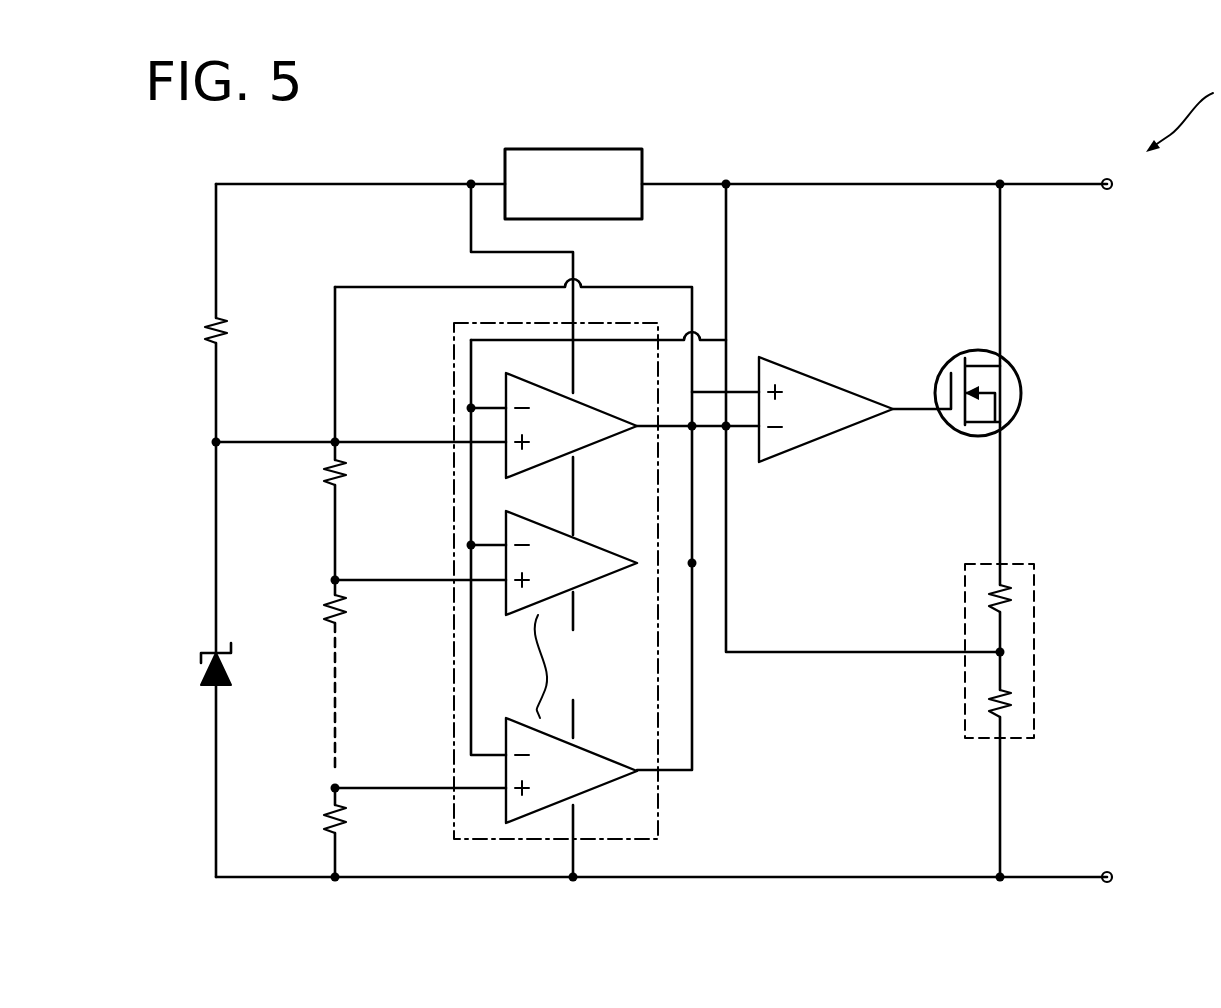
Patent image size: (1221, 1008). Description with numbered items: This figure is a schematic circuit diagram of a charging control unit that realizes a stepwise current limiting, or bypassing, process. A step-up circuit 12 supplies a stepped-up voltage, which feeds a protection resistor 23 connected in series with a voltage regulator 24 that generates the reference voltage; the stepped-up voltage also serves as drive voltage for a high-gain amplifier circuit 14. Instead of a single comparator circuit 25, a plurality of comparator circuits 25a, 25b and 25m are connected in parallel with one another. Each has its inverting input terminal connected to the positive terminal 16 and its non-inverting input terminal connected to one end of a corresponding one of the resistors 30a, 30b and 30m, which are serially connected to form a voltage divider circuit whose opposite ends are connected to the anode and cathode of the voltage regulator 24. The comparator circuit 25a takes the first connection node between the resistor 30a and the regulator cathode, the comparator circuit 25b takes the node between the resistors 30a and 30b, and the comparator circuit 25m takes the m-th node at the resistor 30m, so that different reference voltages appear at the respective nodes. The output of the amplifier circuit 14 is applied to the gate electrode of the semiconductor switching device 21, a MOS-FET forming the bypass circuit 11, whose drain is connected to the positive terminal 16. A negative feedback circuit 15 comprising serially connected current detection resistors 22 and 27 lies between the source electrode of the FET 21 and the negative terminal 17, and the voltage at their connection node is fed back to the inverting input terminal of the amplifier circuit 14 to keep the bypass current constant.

The bypass circuit 11 is at (1036, 356).
The step-up circuit 12 is at (618, 148).
The high-gain amplifier circuit 14 is at (857, 393).
The negative feedback circuit 15 is at (1035, 568).
The positive terminal 16 is at (1113, 185).
The negative terminal 17 is at (1115, 877).
The semiconductor switching device 21 is at (1022, 391).
The current detection resistor 22 is at (1012, 705).
The protection resistor 23 is at (224, 333).
The voltage regulator 24 is at (232, 661).
The comparator circuit 25 is at (454, 357).
The first comparator circuit 25a is at (605, 405).
The second comparator circuit 25b is at (605, 540).
The m-th comparator circuit 25m is at (605, 749).
The current detection resistor 27 is at (1012, 600).
The first resistor 30a is at (340, 472).
The second resistor 30b is at (340, 608).
The m-th resistor 30m is at (345, 818).